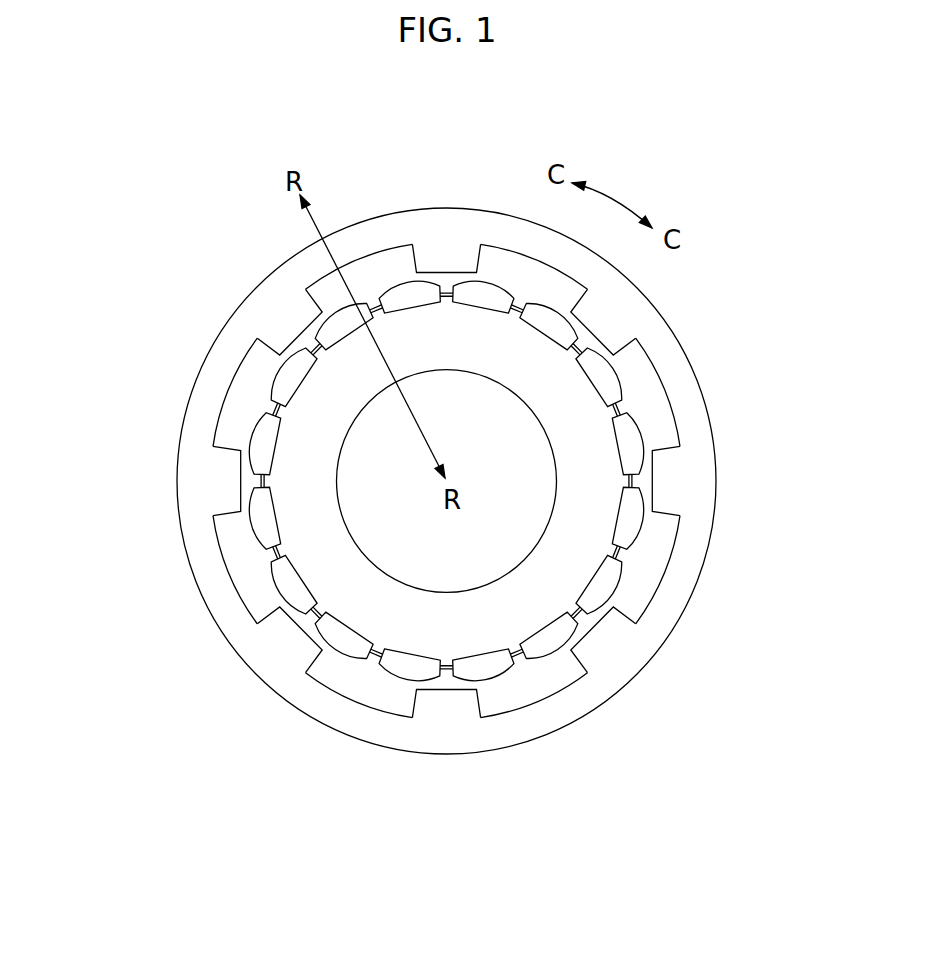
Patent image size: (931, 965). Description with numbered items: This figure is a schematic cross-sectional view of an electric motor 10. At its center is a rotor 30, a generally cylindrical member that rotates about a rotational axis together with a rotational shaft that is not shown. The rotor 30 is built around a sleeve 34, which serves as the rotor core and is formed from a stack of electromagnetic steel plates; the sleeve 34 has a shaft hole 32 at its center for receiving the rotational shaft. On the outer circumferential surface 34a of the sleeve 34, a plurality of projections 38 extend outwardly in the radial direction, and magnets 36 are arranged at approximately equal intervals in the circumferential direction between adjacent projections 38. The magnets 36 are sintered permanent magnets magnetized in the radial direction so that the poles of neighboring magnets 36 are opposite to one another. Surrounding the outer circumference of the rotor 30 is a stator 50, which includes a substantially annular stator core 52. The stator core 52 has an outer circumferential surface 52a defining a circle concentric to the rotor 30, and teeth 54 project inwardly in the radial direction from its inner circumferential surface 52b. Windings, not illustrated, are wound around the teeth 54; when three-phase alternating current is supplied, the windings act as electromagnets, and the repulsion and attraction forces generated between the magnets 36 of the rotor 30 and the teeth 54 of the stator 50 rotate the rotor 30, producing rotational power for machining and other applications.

The electric motor 10 is at (162, 283).
The rotor 30 is at (491, 273).
The shaft hole 32 is at (553, 497).
The sleeve 34 is at (592, 547).
The outer circumferential surface 34a is at (572, 585).
The magnets 36 is at (640, 428).
The projections 38 is at (274, 405).
The stator 50 is at (164, 436).
The stator core 52 is at (213, 578).
The outer circumferential surface 52a is at (242, 668).
The inner circumferential surface 52b is at (325, 683).
The teeth 54 is at (591, 290).